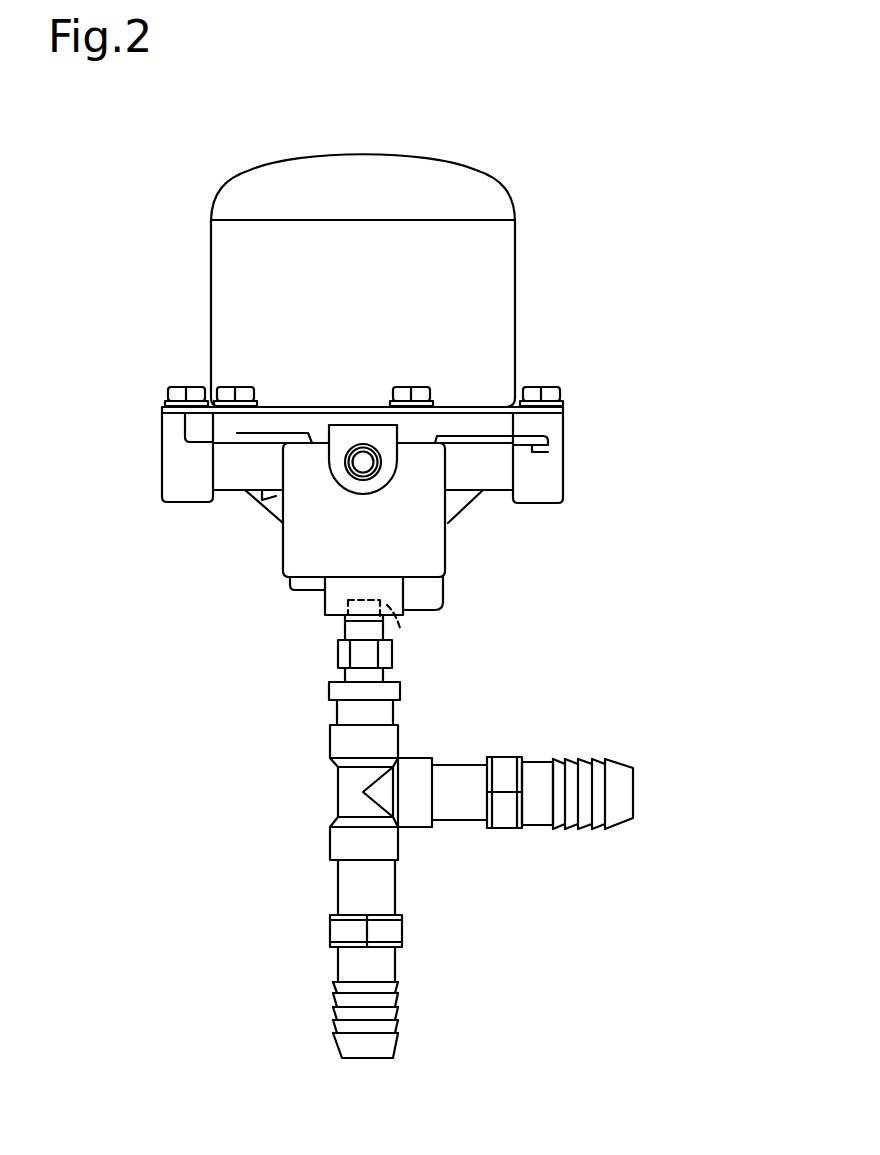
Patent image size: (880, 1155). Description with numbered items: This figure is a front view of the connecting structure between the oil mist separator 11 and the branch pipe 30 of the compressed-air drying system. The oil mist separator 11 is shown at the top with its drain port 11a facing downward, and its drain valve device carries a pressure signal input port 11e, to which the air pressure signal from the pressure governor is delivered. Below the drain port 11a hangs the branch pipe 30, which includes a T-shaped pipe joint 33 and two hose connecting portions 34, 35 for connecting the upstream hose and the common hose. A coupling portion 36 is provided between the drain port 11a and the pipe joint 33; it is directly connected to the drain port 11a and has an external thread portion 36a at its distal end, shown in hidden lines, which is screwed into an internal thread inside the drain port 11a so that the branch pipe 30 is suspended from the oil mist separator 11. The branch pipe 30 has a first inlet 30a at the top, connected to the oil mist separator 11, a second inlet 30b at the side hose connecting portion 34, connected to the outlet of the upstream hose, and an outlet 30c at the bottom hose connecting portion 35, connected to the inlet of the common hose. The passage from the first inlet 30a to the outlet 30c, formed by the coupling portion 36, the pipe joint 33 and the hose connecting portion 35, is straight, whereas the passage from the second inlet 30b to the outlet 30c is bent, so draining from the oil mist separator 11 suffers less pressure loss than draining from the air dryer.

The oil mist separator 11 is at (362, 371).
The pressure signal input port 11e is at (362, 463).
The drain port 11a is at (338, 620).
The branch pipe 30 is at (471, 866).
The first inlet 30a is at (367, 600).
The second inlet 30b is at (633, 790).
The outlet 30c is at (368, 1060).
The T-shaped pipe joint 33 is at (346, 791).
The hose connecting portion 34 is at (567, 759).
The hose connecting portion 35 is at (340, 962).
The coupling portion 36 is at (338, 647).
The external thread portion 36a is at (400, 628).